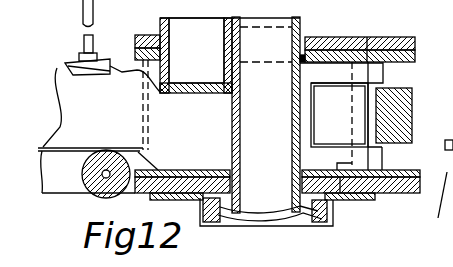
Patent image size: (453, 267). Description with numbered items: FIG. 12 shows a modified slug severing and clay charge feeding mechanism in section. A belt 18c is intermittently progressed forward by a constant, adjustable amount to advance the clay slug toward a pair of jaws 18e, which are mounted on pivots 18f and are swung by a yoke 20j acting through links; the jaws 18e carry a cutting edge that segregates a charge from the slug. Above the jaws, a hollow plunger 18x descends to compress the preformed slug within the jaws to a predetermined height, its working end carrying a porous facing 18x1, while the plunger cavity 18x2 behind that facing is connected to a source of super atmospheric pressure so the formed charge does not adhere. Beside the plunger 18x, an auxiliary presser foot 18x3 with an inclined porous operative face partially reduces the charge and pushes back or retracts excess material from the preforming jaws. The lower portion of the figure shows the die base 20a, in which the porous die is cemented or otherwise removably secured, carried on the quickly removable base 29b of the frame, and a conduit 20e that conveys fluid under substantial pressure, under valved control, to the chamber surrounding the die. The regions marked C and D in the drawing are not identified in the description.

The plunger 18x is at (160, 20).
The porous facing 18x1 is at (169, 94).
The plunger cavity 18x2 is at (196, 50).
The presser foot 18x3 is at (130, 92).
The belt 18c is at (53, 147).
The jaws 18e is at (383, 63).
The pivots 18f is at (357, 116).
The die base 20a is at (158, 206).
The conduit 20e is at (375, 196).
The yoke 20j is at (412, 88).
The base 29b is at (436, 166).
The body C is at (70, 107).
The element D is at (442, 168).